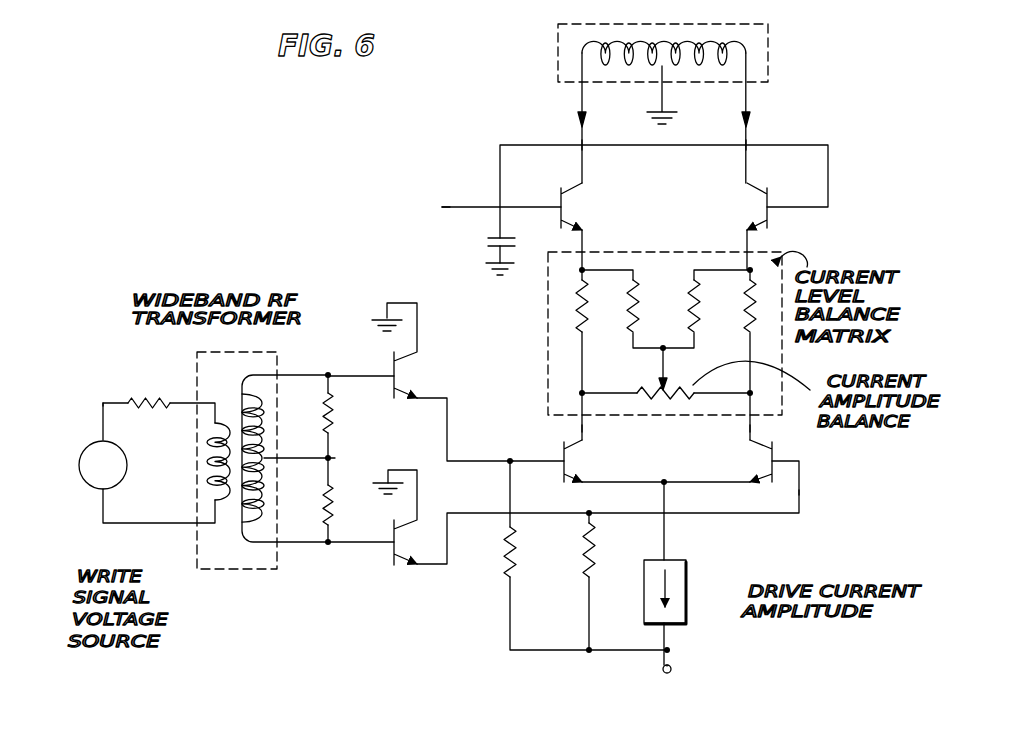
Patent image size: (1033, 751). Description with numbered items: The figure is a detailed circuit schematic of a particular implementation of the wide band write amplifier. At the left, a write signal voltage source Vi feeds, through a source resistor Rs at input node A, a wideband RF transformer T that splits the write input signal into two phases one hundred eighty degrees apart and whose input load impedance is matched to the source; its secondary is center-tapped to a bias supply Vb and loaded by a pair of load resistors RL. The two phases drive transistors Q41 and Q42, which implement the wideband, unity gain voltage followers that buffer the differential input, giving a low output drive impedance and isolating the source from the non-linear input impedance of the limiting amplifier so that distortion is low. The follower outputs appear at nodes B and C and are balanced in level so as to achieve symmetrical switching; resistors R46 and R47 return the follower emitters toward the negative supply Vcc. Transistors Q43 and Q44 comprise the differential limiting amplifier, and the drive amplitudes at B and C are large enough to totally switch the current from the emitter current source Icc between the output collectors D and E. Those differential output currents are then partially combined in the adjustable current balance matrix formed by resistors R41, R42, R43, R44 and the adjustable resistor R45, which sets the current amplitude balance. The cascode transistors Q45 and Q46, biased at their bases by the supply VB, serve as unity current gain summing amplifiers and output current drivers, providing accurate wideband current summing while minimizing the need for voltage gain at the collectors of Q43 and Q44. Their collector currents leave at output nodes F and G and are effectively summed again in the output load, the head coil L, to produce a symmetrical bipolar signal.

The write signal voltage source Vi is at (88, 465).
The node A is at (92, 393).
The source resistor Rs is at (149, 392).
The wideband RF transformer T is at (235, 458).
The load resistors RL is at (341, 459).
The bias voltage - Vb is at (347, 458).
The transistor Q41 is at (408, 350).
The transistor Q42 is at (408, 517).
The node B is at (499, 476).
The resistor R46 is at (489, 552).
The resistor R47 is at (566, 550).
The drive current amplitude current source Icc is at (682, 592).
The supply voltage - Vcc is at (689, 675).
The bias voltage - VB is at (431, 199).
The cascode transistor Q45 is at (588, 206).
The cascode transistor Q46 is at (739, 206).
The head coil L is at (664, 53).
The node F is at (566, 119).
The node G is at (756, 126).
The resistor R41 is at (568, 300).
The resistor R42 is at (733, 306).
The resistor R43 is at (616, 306).
The resistor R44 is at (676, 306).
The resistor R45 is at (652, 384).
The node D is at (575, 426).
The node E is at (757, 425).
The transistor Q43 is at (586, 461).
The transistor Q44 is at (749, 461).
The node C is at (809, 490).